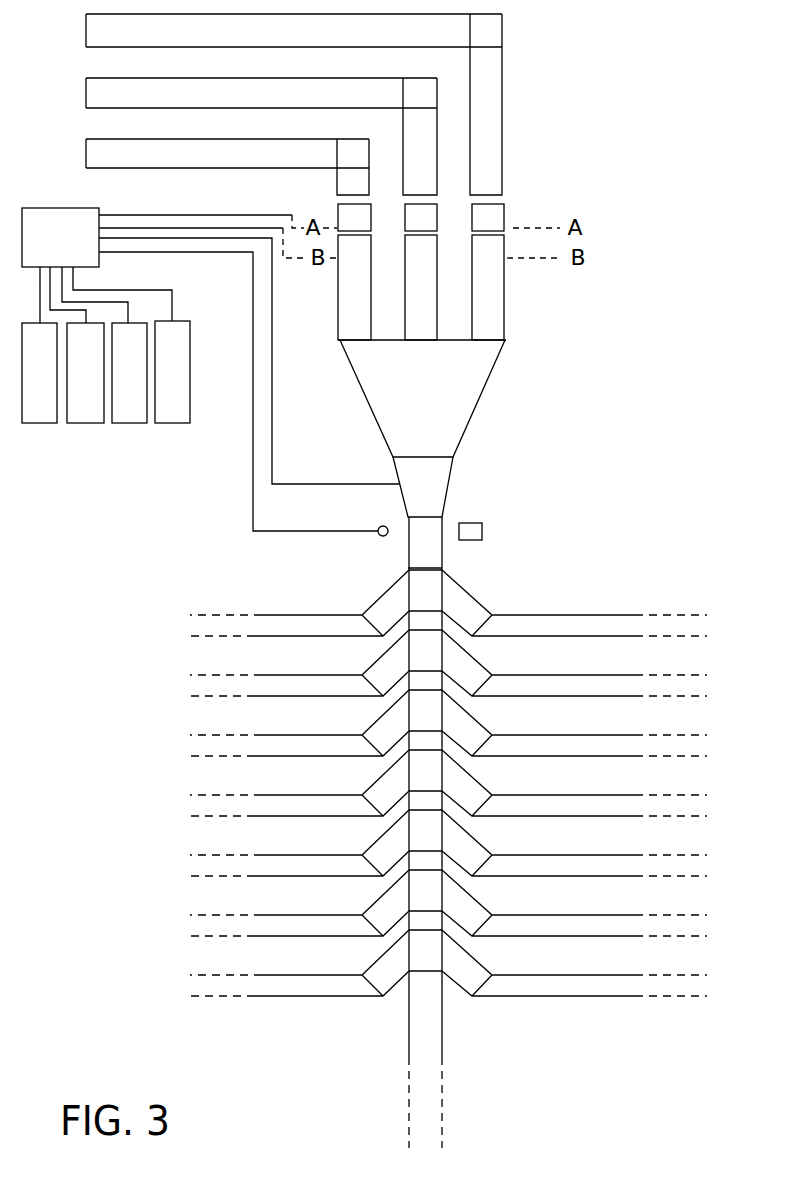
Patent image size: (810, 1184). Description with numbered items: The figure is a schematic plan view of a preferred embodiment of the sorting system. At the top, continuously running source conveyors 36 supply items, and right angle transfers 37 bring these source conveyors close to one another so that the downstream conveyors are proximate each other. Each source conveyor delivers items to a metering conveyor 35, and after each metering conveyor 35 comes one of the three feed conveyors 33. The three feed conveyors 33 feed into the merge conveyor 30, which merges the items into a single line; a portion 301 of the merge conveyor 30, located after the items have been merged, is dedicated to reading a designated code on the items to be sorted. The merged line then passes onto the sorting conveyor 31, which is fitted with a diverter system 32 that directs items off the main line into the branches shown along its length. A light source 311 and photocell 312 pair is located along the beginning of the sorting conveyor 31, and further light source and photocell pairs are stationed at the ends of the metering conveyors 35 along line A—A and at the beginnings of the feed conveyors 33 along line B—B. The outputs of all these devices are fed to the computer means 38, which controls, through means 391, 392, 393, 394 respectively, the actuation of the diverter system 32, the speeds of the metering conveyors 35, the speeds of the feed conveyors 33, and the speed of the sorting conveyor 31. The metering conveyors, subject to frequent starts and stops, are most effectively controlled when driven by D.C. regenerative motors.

The merge conveyor 30 is at (462, 407).
The portion of the merge conveyor 301 is at (437, 485).
The sorting conveyor 31 is at (443, 1018).
The light source 311 is at (482, 531).
The photocell 312 is at (381, 536).
The diverter system 32 is at (428, 593).
The feed conveyors 33 is at (350, 296).
The metering conveyors 35 is at (362, 219).
The source conveyors 36 is at (92, 39).
The right angle transfers 37 is at (493, 36).
The computer means 38 is at (210, 369).
The means for controlling actuation of the diverter system 391 is at (39, 373).
The means for controlling speeds of the metering conveyors 392 is at (85, 373).
The means for controlling speeds of the feed conveyors 393 is at (129, 373).
The means for controlling speed of the sorting conveyor 394 is at (172, 372).